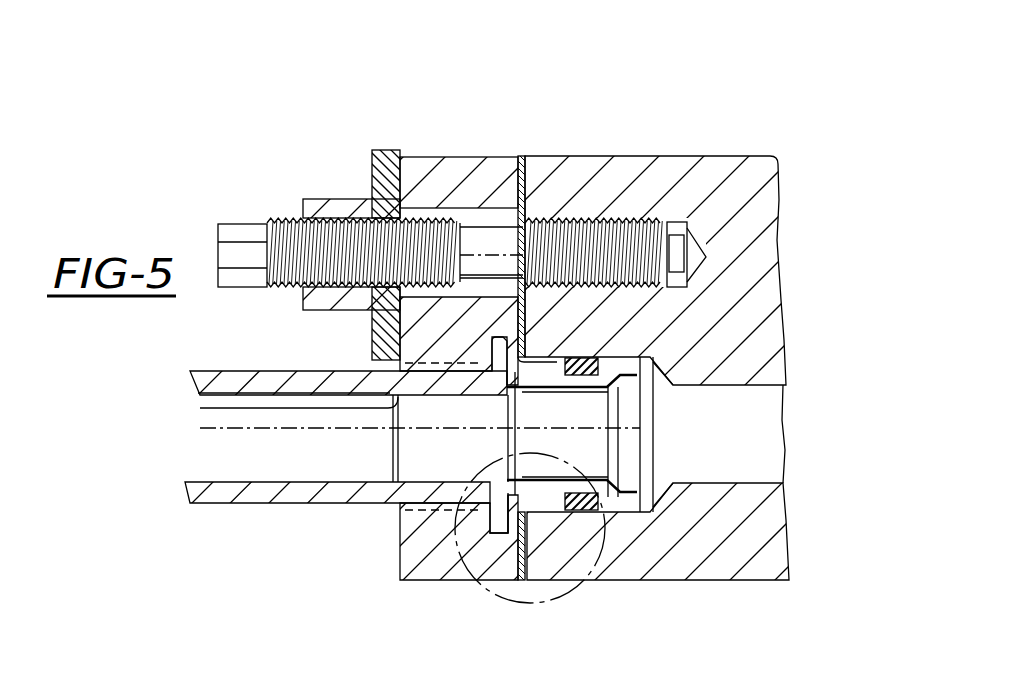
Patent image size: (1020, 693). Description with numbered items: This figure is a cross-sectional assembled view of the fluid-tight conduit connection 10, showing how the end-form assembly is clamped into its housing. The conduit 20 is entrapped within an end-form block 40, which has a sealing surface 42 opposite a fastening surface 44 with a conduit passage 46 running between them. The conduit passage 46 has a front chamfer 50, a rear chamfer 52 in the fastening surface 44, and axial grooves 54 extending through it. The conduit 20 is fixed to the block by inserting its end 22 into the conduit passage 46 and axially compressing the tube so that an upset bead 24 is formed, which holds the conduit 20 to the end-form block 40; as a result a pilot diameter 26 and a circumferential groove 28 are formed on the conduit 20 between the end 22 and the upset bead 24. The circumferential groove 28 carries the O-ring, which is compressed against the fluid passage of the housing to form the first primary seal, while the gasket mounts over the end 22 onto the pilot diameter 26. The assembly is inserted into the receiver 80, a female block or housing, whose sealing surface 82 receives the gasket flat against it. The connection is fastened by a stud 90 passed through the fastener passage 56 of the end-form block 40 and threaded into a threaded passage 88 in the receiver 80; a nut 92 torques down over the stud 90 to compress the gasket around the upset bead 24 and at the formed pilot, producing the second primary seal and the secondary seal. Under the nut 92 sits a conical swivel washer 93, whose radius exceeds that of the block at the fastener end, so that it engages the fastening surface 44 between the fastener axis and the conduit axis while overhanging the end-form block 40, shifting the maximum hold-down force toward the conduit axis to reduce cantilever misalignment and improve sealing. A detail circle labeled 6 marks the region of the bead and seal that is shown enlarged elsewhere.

The conduit connection 10 is at (366, 104).
The conduit 20 is at (213, 496).
The end 22 is at (675, 386).
The upset bead 24 is at (468, 492).
The pilot diameter 26 is at (645, 352).
The circumferential groove 28 is at (600, 357).
The end-form block 40 is at (450, 156).
The sealing surface 42 is at (540, 172).
The fastening surface 44 is at (400, 560).
The conduit passage 46 is at (447, 397).
The front chamfer 50 is at (505, 565).
The rear chamfer 52 is at (395, 505).
The axial grooves 54 is at (395, 375).
The fastener passage 56 is at (482, 212).
The receiver 80 is at (730, 162).
The sealing surface 82 is at (522, 165).
The threaded passage 88 is at (690, 232).
The stud 90 is at (238, 226).
The nut 92 is at (327, 198).
The conical swivel washer 93 is at (385, 149).
The detail circle FIG. 6 is at (612, 556).